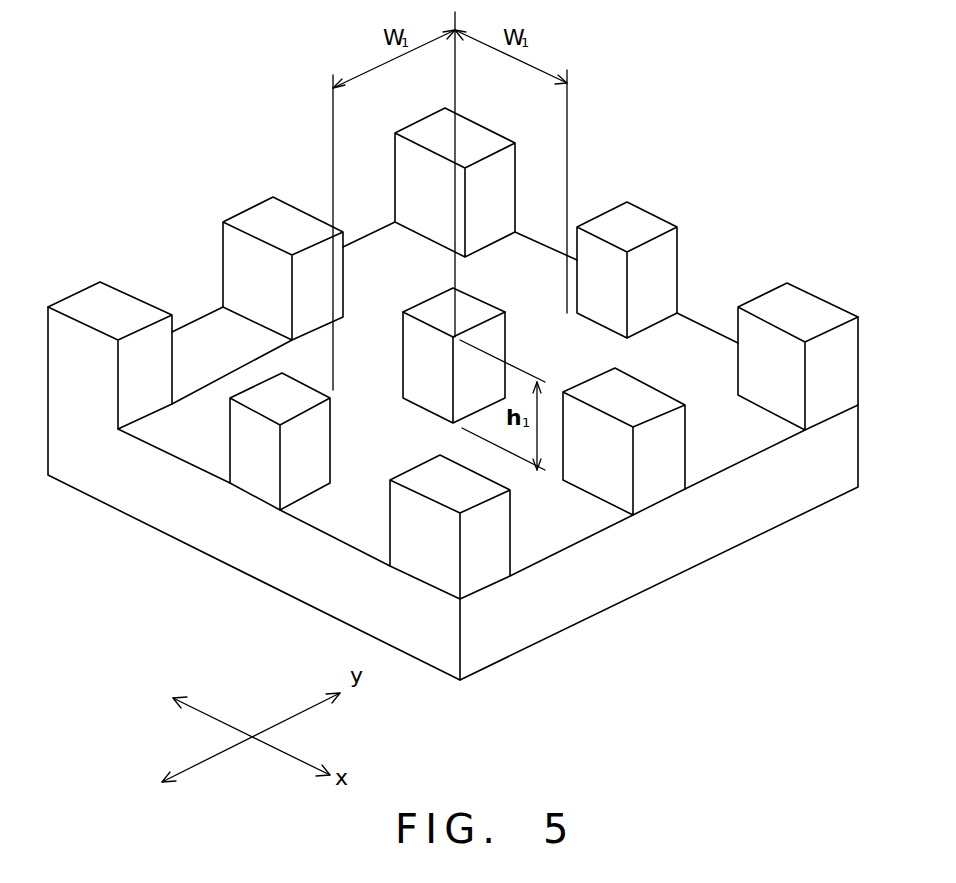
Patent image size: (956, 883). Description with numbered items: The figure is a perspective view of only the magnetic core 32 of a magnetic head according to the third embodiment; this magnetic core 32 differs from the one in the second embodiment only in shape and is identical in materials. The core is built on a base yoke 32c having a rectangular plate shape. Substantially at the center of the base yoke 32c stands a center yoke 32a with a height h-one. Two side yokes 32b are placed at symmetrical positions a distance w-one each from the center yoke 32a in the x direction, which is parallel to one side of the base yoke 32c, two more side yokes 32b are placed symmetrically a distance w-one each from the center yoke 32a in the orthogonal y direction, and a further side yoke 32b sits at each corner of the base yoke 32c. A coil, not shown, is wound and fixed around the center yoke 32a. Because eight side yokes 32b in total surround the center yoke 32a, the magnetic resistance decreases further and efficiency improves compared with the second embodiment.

The magnetic core 32 is at (136, 166).
The center yoke 32a is at (440, 302).
The side yoke 32b is at (90, 295).
The base yoke 32c is at (558, 533).